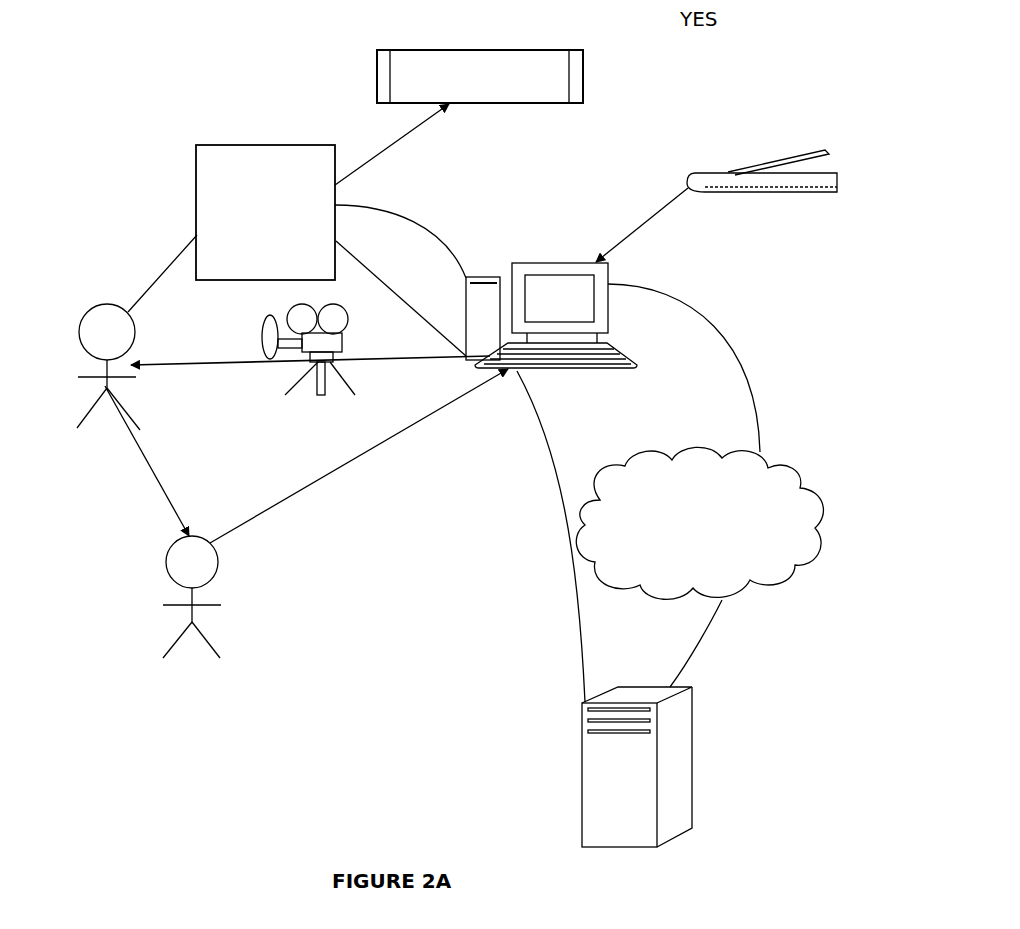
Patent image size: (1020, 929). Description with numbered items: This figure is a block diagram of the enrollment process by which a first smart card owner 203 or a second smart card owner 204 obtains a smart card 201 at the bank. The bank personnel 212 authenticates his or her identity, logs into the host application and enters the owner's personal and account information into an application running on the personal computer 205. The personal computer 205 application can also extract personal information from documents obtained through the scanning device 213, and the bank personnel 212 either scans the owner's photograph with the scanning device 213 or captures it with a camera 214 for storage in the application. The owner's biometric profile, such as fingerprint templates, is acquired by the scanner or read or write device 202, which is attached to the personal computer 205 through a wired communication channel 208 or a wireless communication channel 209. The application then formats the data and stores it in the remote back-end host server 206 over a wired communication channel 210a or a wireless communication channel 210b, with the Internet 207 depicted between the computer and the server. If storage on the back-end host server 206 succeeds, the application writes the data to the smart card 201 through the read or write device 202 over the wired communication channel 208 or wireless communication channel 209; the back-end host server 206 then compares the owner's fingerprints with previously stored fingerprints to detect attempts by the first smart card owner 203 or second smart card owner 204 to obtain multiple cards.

The smart card 201 is at (583, 80).
The scanner or read or write device 202 is at (196, 151).
The first smart card owner 203 is at (90, 333).
The second smart card owner 204 is at (110, 305).
The personal computer 205 is at (572, 263).
The back-end host server 206 is at (583, 825).
The internet 207 is at (709, 452).
The wired communication channel 208 is at (403, 295).
The wireless communication channel 209 is at (455, 256).
The wired communication channel 210a is at (752, 310).
The wireless communication channel 210b is at (703, 632).
The bank personnel 212 is at (167, 565).
The scanning device 213 is at (736, 171).
The camera 214 is at (256, 345).